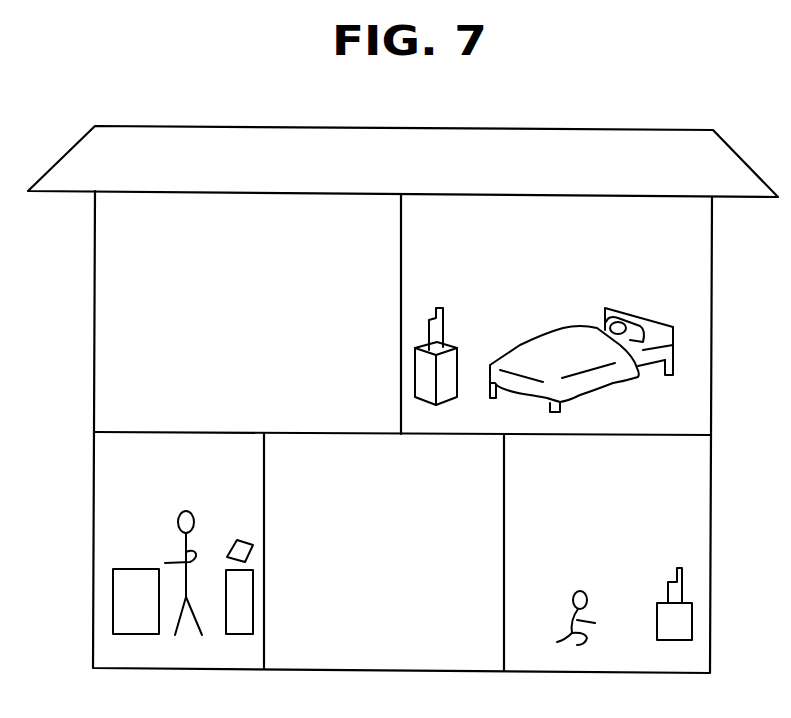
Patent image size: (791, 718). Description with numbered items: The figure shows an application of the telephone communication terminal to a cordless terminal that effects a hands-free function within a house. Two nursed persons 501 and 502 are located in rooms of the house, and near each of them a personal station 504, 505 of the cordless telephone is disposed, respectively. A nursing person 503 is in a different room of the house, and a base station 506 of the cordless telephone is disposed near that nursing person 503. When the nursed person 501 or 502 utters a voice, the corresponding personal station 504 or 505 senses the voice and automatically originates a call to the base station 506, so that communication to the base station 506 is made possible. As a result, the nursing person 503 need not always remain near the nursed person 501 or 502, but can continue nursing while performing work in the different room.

The nursed person 501 is at (588, 320).
The nursed person 502 is at (580, 590).
The nursing person 503 is at (183, 509).
The personal station 504 is at (432, 312).
The personal station 505 is at (672, 575).
The base station 506 is at (238, 540).